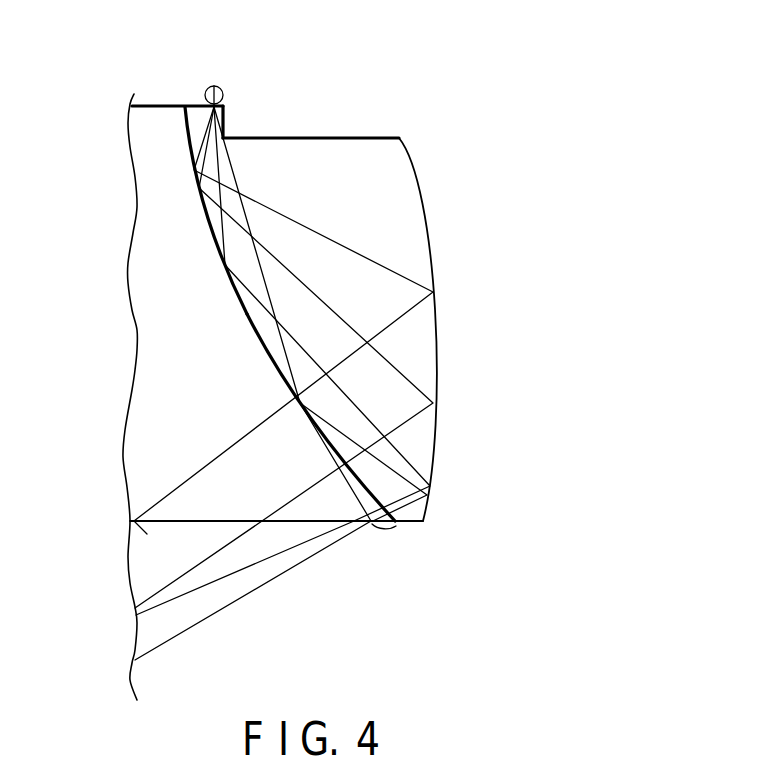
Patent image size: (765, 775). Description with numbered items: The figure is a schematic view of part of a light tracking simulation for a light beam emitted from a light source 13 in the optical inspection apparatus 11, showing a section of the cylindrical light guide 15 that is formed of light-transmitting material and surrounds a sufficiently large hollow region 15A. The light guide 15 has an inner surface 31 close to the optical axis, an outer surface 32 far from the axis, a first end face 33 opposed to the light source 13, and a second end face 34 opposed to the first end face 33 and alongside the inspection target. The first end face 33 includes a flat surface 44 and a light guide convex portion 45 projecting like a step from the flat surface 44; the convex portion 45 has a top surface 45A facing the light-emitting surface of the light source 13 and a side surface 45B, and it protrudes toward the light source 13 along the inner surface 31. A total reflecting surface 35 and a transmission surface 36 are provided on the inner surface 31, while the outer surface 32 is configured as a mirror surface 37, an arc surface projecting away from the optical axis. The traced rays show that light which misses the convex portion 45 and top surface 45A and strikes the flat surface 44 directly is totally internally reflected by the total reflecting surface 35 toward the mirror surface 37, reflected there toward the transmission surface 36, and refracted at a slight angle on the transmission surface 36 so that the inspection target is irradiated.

The optical inspection apparatus 11 is at (422, 104).
The light source 13 is at (217, 86).
The light guide 15 is at (410, 158).
The hollow region 15A is at (172, 324).
The inner surface 31 is at (252, 368).
The outer surface 32 is at (458, 367).
The first end face 33 is at (319, 112).
The second end face 34 is at (413, 523).
The total reflecting surface 35 is at (168, 149).
The transmission surface 36 is at (296, 398).
The mirror surface 37 is at (438, 328).
The flat surface 44 is at (333, 137).
The light guide convex portion 45 is at (200, 121).
The top surface 45A is at (193, 104).
The side surface 45B is at (223, 137).